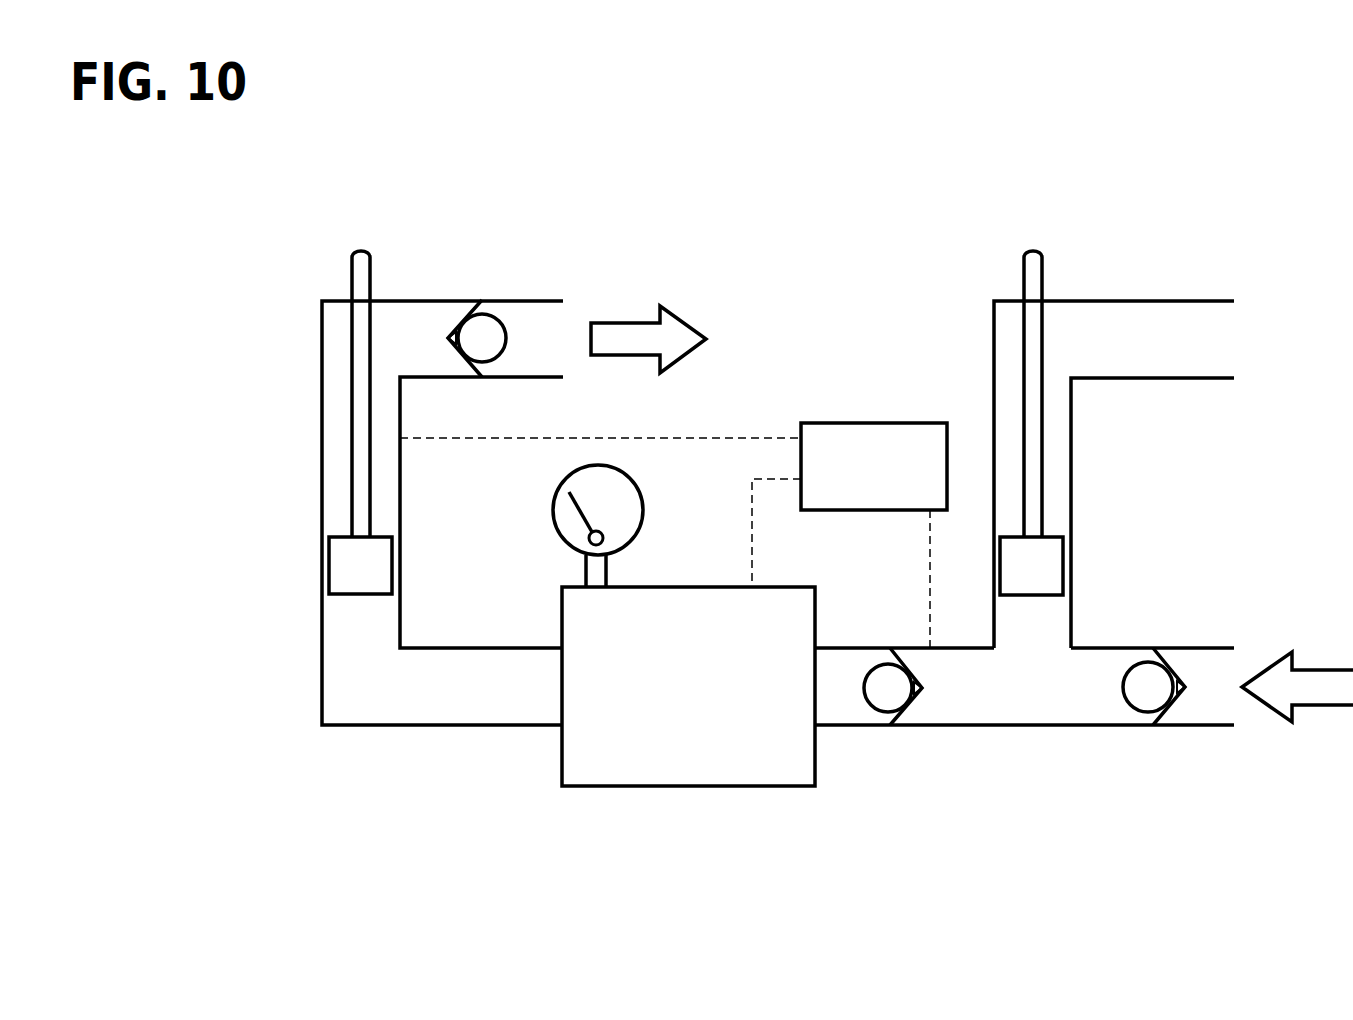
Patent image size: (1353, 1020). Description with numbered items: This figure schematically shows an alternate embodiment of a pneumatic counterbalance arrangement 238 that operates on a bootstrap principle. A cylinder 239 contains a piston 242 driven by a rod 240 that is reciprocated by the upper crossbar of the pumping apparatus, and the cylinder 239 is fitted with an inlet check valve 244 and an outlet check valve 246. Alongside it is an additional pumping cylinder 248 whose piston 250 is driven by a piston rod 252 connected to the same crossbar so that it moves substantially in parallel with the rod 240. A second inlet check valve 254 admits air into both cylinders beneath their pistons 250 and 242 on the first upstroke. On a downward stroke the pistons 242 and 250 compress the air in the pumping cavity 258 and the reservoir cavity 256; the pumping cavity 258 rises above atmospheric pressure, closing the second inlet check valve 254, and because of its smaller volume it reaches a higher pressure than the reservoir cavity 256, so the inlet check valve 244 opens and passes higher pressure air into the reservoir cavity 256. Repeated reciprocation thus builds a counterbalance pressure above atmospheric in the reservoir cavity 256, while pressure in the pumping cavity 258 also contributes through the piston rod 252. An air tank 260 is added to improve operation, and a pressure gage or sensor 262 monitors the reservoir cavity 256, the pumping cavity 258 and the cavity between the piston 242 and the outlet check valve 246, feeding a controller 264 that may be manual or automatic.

The pneumatic counterbalance arrangement 238 is at (241, 527).
The cylinder 239 is at (322, 466).
The rod 240 is at (352, 265).
The piston 242 is at (347, 567).
The inlet check valve 244 is at (900, 725).
The outlet check valve 246 is at (478, 300).
The pumping cylinder 248 is at (1071, 460).
The piston 250 is at (1053, 569).
The piston rod 252 is at (1024, 265).
The second inlet check valve 254 is at (1163, 725).
The reservoir cavity 256 is at (715, 703).
The pumping cavity 258 is at (1050, 702).
The air tank 260 is at (699, 786).
The pressure gage or sensor 262 is at (568, 512).
The controller 264 is at (900, 482).